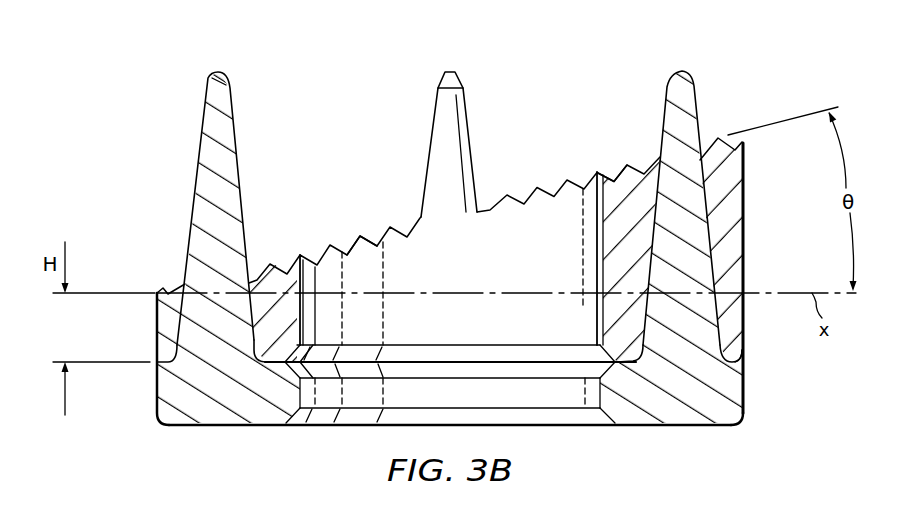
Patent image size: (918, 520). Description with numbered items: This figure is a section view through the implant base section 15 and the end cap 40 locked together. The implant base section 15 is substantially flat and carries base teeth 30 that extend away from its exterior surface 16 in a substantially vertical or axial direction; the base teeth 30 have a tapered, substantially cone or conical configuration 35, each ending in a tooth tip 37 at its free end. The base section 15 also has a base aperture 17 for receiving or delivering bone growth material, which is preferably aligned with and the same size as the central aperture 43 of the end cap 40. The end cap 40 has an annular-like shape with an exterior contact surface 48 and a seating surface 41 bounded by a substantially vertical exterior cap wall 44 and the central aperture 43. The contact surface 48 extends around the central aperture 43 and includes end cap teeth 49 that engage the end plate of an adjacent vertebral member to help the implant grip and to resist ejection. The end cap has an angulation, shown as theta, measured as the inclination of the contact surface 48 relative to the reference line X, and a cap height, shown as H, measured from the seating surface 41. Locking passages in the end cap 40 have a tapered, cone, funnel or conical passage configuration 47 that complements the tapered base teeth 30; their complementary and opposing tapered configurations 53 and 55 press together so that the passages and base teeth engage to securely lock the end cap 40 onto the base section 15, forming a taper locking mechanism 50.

The implant base section 15 is at (692, 429).
The exterior surface 16 is at (736, 356).
The base aperture 17 is at (597, 385).
The base teeth 30 is at (197, 145).
The tapered conical configuration 35 is at (196, 186).
The tooth tip 37 is at (218, 72).
The end cap 40 is at (762, 382).
The seating surface 41 is at (248, 362).
The central aperture 43 is at (533, 203).
The exterior cap wall 44 is at (745, 192).
The tapered conical passage configuration 47 is at (180, 345).
The exterior contact surface 48 is at (624, 174).
The end cap teeth 49 is at (358, 234).
The taper locking mechanism 50 is at (273, 304).
The tapered configuration of locking passages 53 is at (247, 344).
The tapered configuration of base teeth 55 is at (170, 315).